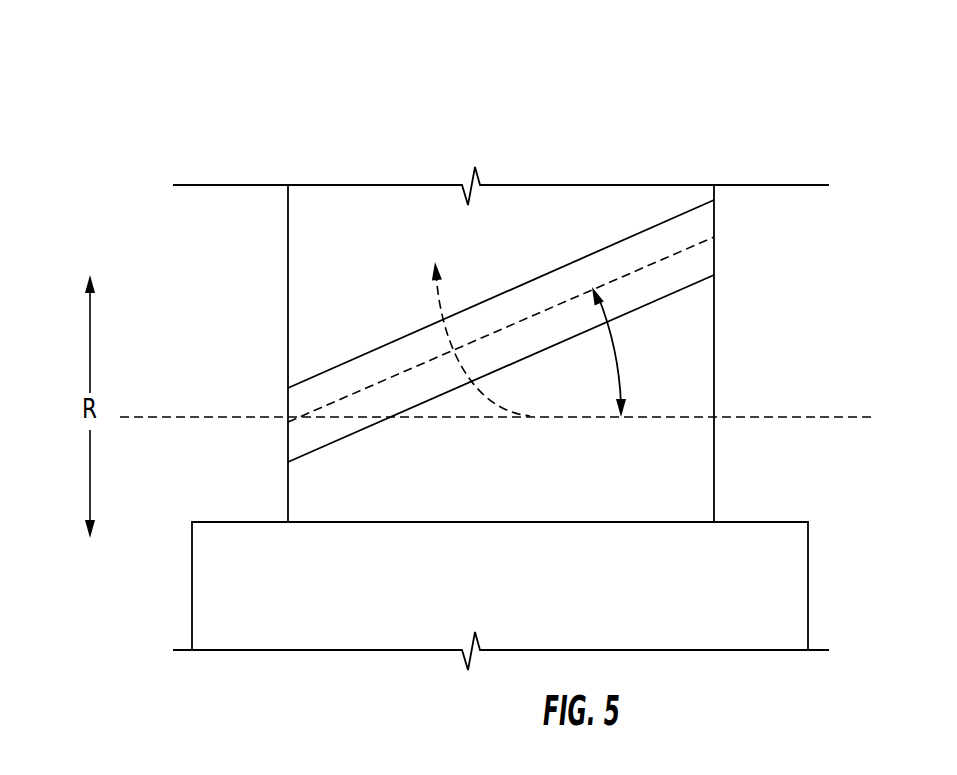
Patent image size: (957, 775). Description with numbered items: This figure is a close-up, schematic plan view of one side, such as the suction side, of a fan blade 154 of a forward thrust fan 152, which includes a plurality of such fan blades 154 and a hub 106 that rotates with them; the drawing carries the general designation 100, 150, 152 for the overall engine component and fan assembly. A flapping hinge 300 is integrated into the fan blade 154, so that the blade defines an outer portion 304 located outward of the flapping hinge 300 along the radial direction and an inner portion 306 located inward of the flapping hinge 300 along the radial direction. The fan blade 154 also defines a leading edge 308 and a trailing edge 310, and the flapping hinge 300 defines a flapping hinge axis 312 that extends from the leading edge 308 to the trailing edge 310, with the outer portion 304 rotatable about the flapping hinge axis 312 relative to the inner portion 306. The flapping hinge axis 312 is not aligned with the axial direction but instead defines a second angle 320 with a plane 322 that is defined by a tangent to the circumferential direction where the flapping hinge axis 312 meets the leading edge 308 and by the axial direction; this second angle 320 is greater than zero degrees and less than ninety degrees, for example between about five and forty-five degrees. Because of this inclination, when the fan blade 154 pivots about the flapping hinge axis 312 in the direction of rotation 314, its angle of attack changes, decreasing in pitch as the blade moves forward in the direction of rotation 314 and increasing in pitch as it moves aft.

The turbine engine component 100 is at (160, 106).
The ceramic matrix composite component 150 is at (123, 38).
The fan 152 is at (166, 38).
The fan blade 154 is at (541, 110).
The hub 106 is at (220, 582).
The flapping hinge 300 is at (660, 299).
The outer portion 304 is at (373, 223).
The inner portion 306 is at (657, 470).
The leading edge 308 is at (278, 248).
The trailing edge 310 is at (725, 440).
The flapping hinge axis 312 is at (677, 250).
The direction of rotation 314 is at (448, 337).
The second angle 320 is at (625, 364).
The plane 322 is at (199, 420).